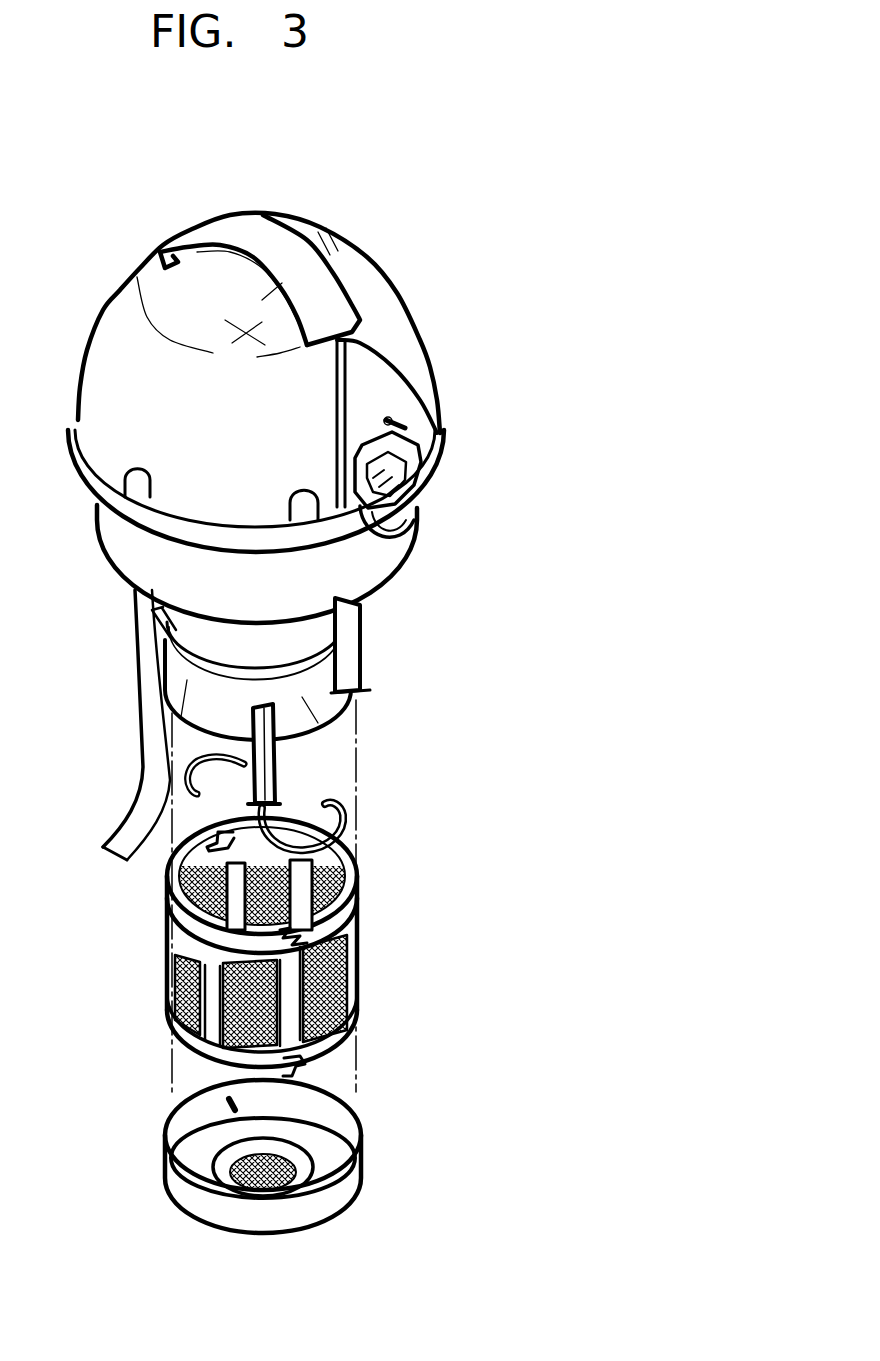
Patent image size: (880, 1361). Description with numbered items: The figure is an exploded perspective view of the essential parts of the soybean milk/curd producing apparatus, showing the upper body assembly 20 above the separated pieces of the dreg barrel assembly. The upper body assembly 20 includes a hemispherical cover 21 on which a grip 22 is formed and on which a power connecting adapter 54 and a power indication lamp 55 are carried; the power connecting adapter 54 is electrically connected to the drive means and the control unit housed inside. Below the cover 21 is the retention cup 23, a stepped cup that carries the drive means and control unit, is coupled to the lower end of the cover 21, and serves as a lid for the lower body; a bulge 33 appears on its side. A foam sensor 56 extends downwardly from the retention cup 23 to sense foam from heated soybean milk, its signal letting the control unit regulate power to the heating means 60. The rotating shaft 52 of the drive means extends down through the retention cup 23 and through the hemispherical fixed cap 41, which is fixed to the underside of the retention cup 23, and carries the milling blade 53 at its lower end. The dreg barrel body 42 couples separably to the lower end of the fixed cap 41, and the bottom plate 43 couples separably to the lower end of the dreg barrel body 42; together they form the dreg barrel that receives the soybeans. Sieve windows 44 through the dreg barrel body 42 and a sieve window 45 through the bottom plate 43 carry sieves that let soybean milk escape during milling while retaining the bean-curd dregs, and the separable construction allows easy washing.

The upper body assembly 20 is at (393, 252).
The cover 21 is at (402, 332).
The grip 22 is at (263, 237).
The retention cup 23 is at (290, 643).
The bulge on housing 33 is at (423, 523).
The hemispherical fixed cap 41 is at (340, 710).
The dreg barrel body 42 is at (357, 922).
The bottom plate 43 is at (333, 1195).
The sieve window 44 is at (360, 982).
The sieve window 45 is at (293, 1160).
The rotating shaft 52 is at (270, 758).
The milling blade 53 is at (355, 813).
The power connecting adapter 54 is at (407, 470).
The power indication lamp 55 is at (397, 416).
The foam sensor 56 is at (137, 613).
The heating means 60 is at (347, 657).